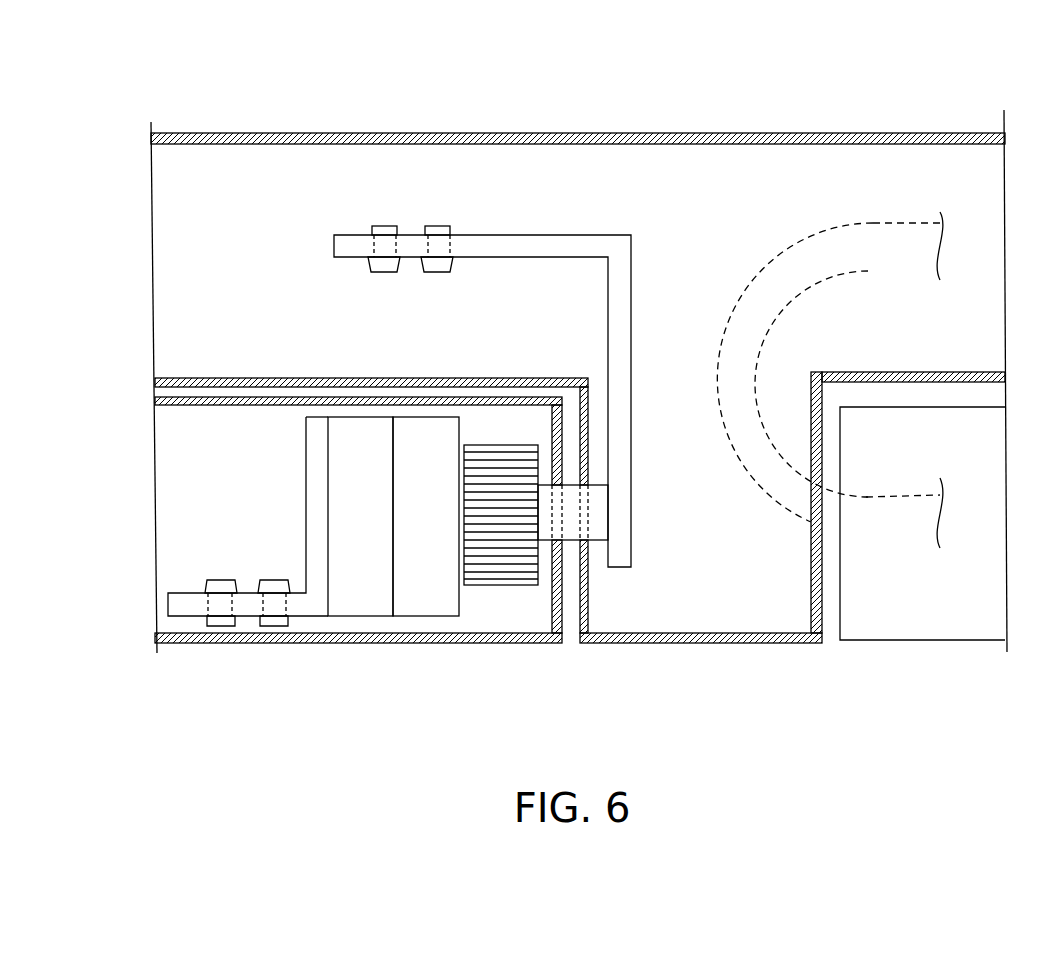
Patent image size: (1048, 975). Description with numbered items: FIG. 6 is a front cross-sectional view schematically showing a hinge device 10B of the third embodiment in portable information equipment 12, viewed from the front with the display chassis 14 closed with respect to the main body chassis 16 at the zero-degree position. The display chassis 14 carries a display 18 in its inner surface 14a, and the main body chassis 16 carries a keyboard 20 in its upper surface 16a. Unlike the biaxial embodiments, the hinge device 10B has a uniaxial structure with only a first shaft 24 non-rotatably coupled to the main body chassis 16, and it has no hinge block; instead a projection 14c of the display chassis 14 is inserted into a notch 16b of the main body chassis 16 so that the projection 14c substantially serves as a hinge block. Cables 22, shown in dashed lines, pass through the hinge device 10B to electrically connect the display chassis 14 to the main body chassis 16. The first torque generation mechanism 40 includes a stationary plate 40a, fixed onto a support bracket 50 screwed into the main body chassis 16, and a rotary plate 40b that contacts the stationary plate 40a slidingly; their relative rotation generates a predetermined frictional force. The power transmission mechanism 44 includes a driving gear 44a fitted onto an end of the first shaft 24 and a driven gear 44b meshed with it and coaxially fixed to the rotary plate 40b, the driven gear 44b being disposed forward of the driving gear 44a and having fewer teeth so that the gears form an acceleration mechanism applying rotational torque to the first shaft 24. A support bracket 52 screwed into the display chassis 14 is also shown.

The portable information equipment 12 is at (157, 51).
The display chassis 14 is at (292, 134).
The inner surface 14a is at (218, 406).
The display 18 is at (358, 520).
The projection 14c is at (730, 644).
The main body chassis 16 is at (924, 642).
The upper surface 16a is at (262, 378).
The keyboard 20 is at (371, 481).
The notch 16b is at (840, 613).
The cables 22 is at (752, 280).
The first shaft 24 is at (603, 532).
The hinge device 10B is at (660, 171).
The first torque generation mechanism 40 is at (382, 572).
The stationary plate 40a is at (345, 598).
The rotary plate 40b is at (420, 595).
The power transmission mechanism 44 is at (510, 586).
The driving gear 44a is at (482, 560).
The driven gear 44b is at (515, 535).
The support bracket 50 is at (305, 602).
The support bracket 52 is at (617, 250).